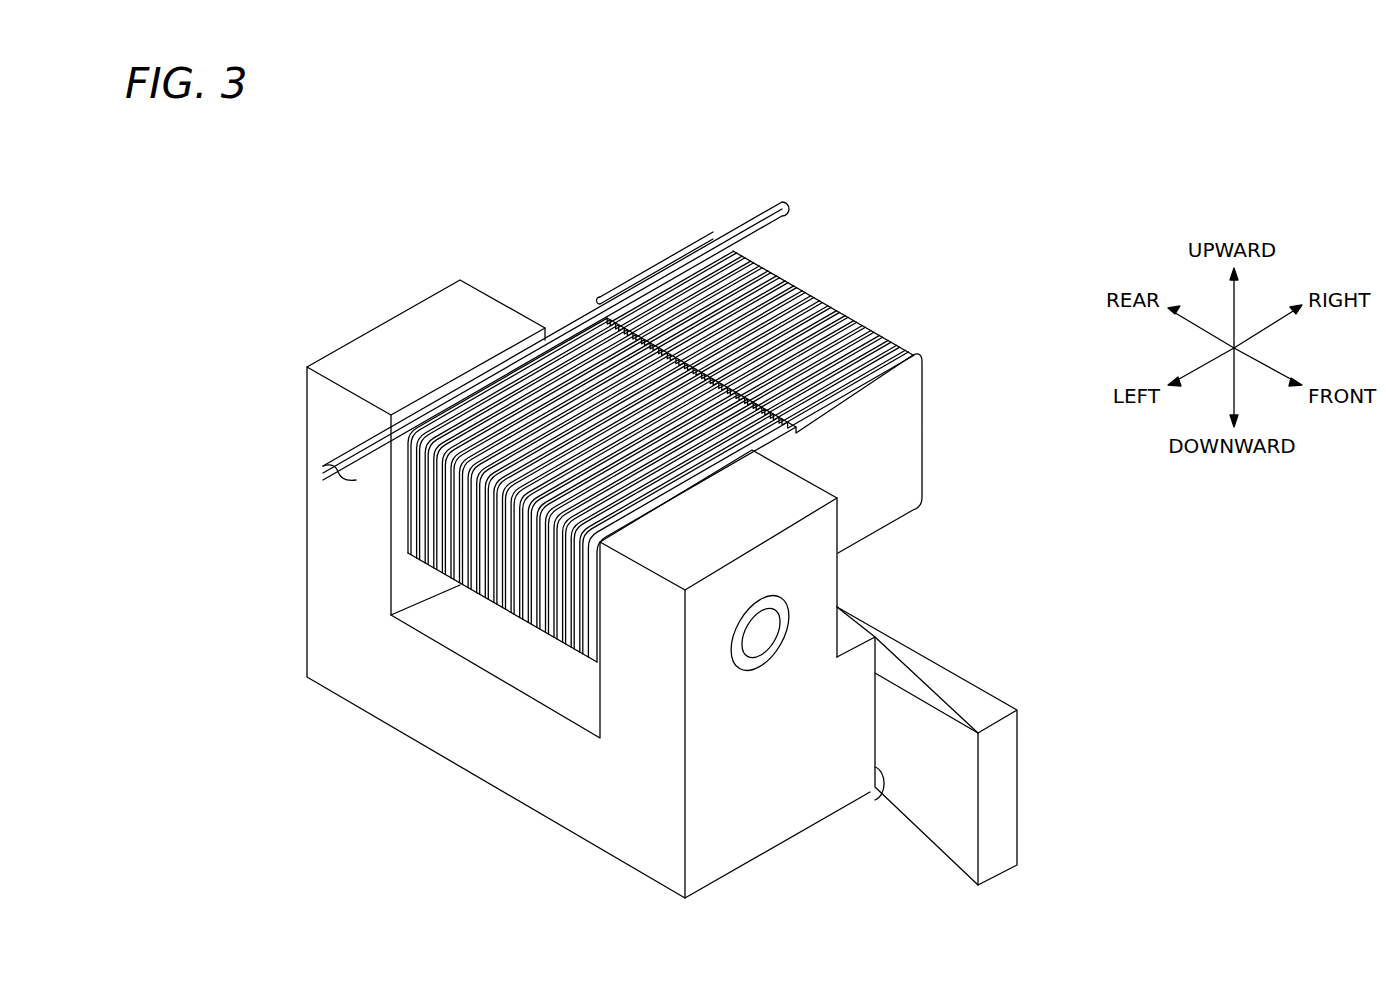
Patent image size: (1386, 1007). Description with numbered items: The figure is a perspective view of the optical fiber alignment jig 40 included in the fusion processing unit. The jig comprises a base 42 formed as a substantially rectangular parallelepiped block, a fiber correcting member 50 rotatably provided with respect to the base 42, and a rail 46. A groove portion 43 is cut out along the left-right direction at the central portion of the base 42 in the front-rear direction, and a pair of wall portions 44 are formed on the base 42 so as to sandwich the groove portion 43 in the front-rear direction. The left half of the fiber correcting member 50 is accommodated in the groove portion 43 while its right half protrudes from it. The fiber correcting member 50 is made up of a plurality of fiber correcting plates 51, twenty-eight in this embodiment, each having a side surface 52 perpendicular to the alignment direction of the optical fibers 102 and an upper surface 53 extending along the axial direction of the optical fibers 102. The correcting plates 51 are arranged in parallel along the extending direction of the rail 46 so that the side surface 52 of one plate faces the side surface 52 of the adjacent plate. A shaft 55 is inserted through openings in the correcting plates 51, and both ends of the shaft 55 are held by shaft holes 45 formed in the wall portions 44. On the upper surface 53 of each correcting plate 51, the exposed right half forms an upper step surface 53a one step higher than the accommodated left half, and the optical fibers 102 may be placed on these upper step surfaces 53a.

The optical fiber alignment jig 40 is at (506, 230).
The base 42 is at (497, 757).
The groove portion 43 is at (470, 627).
The wall portions 44 is at (413, 330).
The shaft holes 45 is at (765, 668).
The rail 46 is at (935, 835).
The fiber correcting member 50 is at (836, 265).
The fiber correcting plates 51 is at (838, 308).
The side surface 52 is at (895, 472).
The upper surface 53 is at (813, 460).
The upper step surface 53a is at (916, 357).
The shaft 55 is at (767, 630).
The optical fibers 102 is at (745, 222).